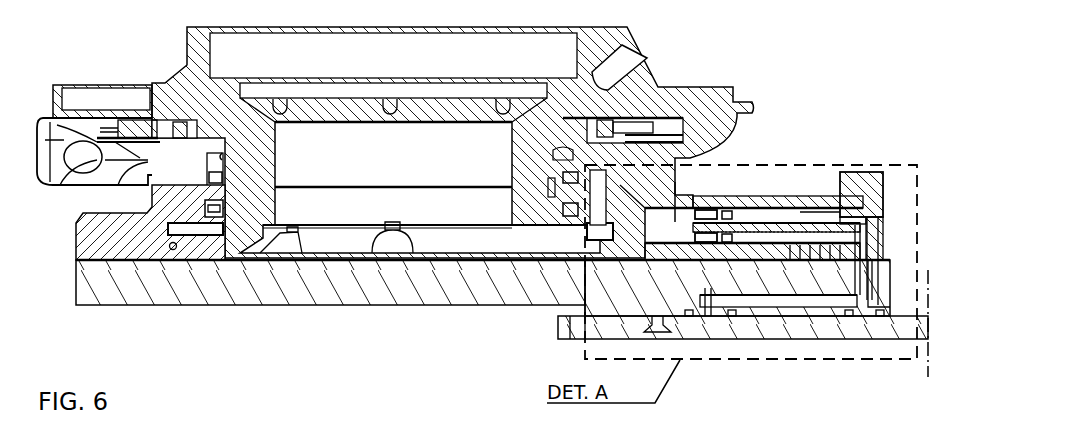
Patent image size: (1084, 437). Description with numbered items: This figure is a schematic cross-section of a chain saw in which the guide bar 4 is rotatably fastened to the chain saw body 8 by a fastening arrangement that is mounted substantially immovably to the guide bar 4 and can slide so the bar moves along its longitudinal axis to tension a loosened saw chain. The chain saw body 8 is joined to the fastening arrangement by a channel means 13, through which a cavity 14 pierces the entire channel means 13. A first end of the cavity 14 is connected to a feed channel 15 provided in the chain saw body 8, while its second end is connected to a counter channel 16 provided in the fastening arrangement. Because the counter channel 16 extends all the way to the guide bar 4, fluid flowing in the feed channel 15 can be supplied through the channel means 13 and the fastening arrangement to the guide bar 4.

The chain saw body 8 is at (173, 100).
The guide bar 4 is at (778, 328).
The channel means 13 is at (833, 217).
The cavity 14 is at (770, 227).
The feed channel 15 is at (678, 176).
The counter channel 16 is at (870, 225).